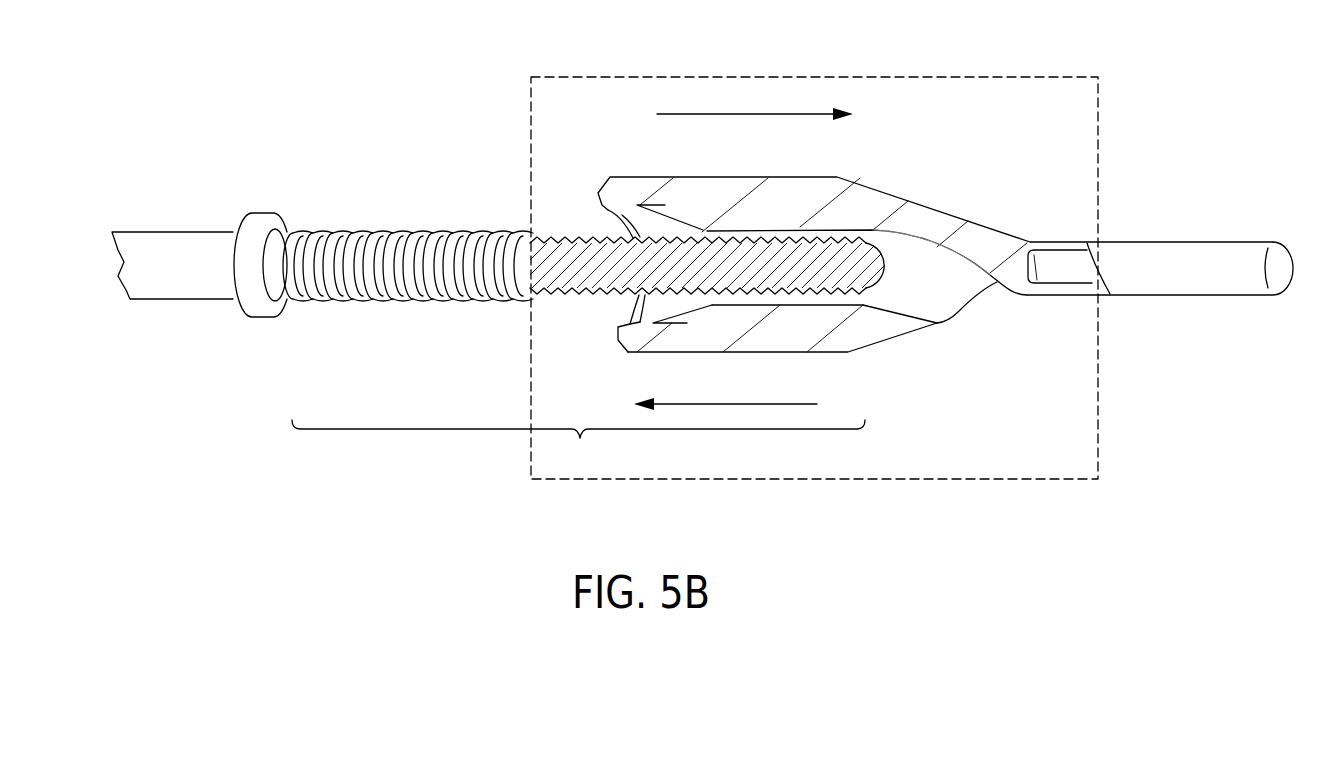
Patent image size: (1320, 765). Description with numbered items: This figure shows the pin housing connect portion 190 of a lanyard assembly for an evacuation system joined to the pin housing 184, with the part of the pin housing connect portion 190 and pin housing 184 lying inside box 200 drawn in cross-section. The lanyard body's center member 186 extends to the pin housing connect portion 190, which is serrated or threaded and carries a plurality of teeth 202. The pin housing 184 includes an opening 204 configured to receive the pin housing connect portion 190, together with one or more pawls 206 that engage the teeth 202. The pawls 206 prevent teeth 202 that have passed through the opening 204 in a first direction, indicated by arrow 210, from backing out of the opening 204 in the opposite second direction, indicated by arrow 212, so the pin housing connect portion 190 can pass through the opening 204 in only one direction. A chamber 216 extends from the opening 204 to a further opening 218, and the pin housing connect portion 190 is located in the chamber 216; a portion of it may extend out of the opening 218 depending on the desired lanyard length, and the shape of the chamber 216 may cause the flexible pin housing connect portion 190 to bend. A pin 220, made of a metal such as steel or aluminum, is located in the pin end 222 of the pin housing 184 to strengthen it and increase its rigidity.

The pin housing 184 is at (873, 194).
The center member 186 is at (175, 245).
The pin housing connect portion 190 is at (578, 446).
The box 200 is at (570, 77).
The teeth 202 is at (383, 237).
The opening 204 is at (592, 222).
The pawls 206 is at (658, 228).
The arrow 210 is at (713, 113).
The arrow 212 is at (780, 404).
The chamber 216 is at (912, 258).
The opening 218 is at (967, 312).
The pin 220 is at (1050, 272).
The pin end 222 is at (1203, 260).